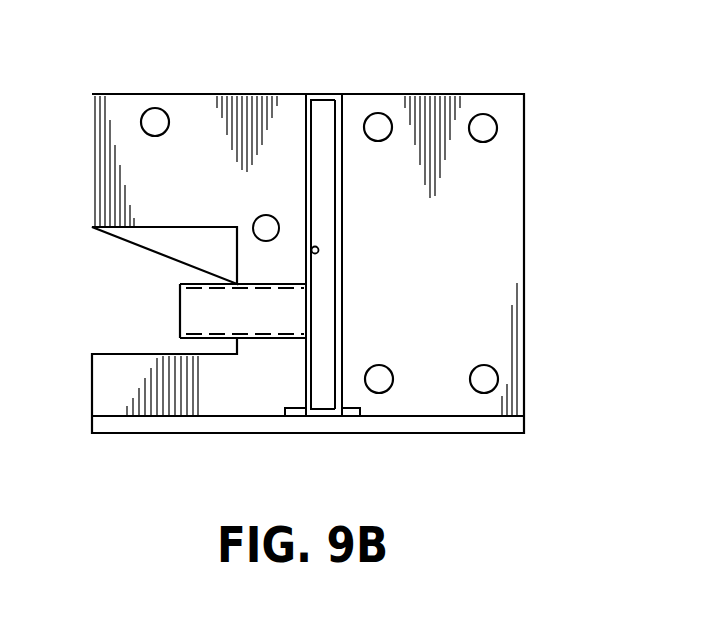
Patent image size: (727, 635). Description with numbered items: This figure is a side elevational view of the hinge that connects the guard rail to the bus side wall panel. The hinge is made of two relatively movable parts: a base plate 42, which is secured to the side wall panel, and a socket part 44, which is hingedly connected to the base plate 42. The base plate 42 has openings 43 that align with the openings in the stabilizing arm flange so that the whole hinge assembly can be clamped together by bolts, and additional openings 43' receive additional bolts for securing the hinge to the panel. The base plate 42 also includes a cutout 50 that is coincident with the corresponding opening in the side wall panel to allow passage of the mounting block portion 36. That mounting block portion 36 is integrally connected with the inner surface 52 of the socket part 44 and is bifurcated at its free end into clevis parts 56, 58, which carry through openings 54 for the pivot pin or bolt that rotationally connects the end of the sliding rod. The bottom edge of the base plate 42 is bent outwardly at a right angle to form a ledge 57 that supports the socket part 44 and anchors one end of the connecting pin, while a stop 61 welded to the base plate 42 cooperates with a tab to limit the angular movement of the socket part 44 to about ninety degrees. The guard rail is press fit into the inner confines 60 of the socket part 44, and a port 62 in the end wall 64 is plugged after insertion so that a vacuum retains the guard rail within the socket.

The mounting block portion 36 is at (236, 321).
The base plate 42 is at (502, 105).
The openings 43 is at (481, 360).
The additional openings 43' is at (298, 74).
The socket part 44 is at (343, 272).
The cutout 50 is at (125, 228).
The inner surface 52 is at (305, 135).
The through openings 54 is at (207, 284).
The clevis part 56 is at (272, 285).
The ledge 57 is at (524, 419).
The clevis part 58 is at (268, 340).
The inner confines 60 is at (330, 100).
The stop 61 is at (362, 413).
The port 62 is at (319, 247).
The end wall 64 is at (325, 307).